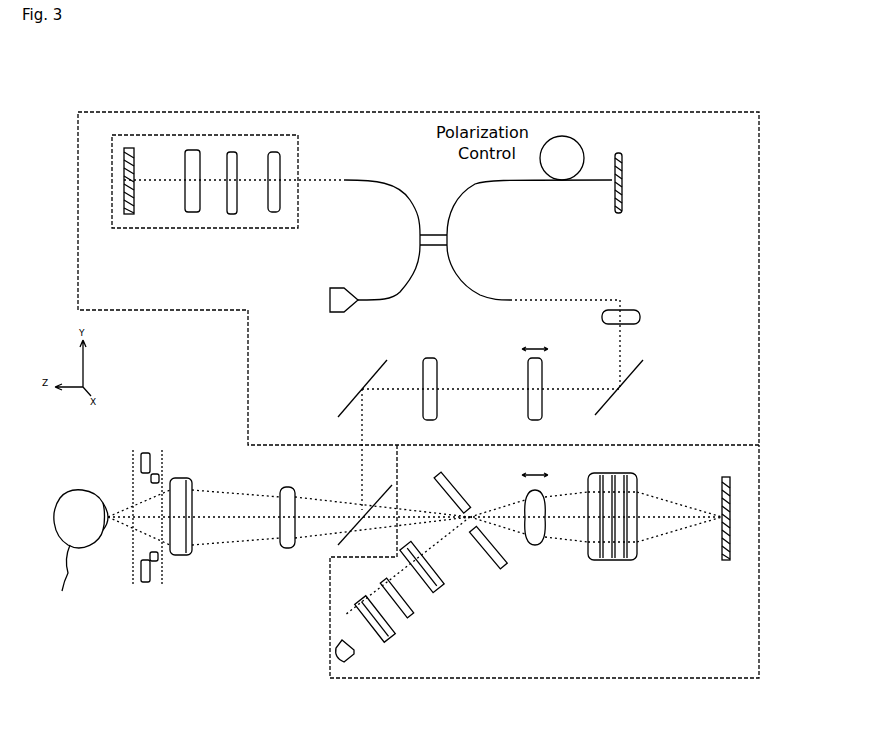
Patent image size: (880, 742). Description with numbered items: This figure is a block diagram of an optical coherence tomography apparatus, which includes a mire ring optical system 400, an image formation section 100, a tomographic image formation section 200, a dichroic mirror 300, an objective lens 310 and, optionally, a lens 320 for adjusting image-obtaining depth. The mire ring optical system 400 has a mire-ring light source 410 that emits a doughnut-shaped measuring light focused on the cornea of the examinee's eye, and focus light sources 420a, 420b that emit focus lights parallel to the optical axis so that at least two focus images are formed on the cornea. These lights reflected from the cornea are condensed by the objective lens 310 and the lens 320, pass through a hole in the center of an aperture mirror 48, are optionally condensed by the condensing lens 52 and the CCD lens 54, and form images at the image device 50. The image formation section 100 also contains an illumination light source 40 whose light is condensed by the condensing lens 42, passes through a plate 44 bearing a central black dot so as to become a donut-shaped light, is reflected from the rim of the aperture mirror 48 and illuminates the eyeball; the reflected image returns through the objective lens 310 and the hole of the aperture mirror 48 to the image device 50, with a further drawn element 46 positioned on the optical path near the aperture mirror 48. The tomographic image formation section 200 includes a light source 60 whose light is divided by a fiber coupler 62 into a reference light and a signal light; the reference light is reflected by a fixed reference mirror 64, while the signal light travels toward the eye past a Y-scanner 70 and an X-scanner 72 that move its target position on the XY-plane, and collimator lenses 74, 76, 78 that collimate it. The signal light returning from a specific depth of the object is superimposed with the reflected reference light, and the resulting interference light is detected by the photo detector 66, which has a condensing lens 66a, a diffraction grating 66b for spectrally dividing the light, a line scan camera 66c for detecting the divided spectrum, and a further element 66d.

The tomographic image formation section 200 is at (759, 268).
The photo detector 66 is at (196, 135).
The line scan camera 66c is at (132, 214).
The wave plate 66d is at (195, 212).
The diffraction grating 66b is at (235, 214).
The condensing lens 66a is at (276, 212).
The fiber coupler 62 is at (435, 225).
The reference mirror 64 is at (622, 200).
The light source 60 is at (329, 300).
The Y-scanner 70 is at (346, 384).
The collimator lens 76 is at (437, 368).
The collimator lens 74 is at (542, 368).
The collimator lens 78 is at (640, 318).
The X-scanner 72 is at (636, 368).
The image formation section 100 is at (759, 558).
The mire ring optical system 400 is at (135, 580).
The mire-ring light source 410 is at (146, 473).
The focus light source 420a is at (158, 474).
The focus light source 420b is at (156, 561).
The objective lens 310 is at (190, 480).
The lens for adjusting image-obtaining depth 320 is at (286, 548).
The dichroic mirror 300 is at (378, 477).
The mirror 46 is at (452, 492).
The aperture mirror 48 is at (498, 566).
The condensing lens 42 is at (438, 590).
The plate 44 is at (410, 613).
The illumination light source 40 is at (352, 666).
The condensing lens 52 is at (535, 545).
The CCD lens 54 is at (612, 560).
The image device 50 is at (718, 556).